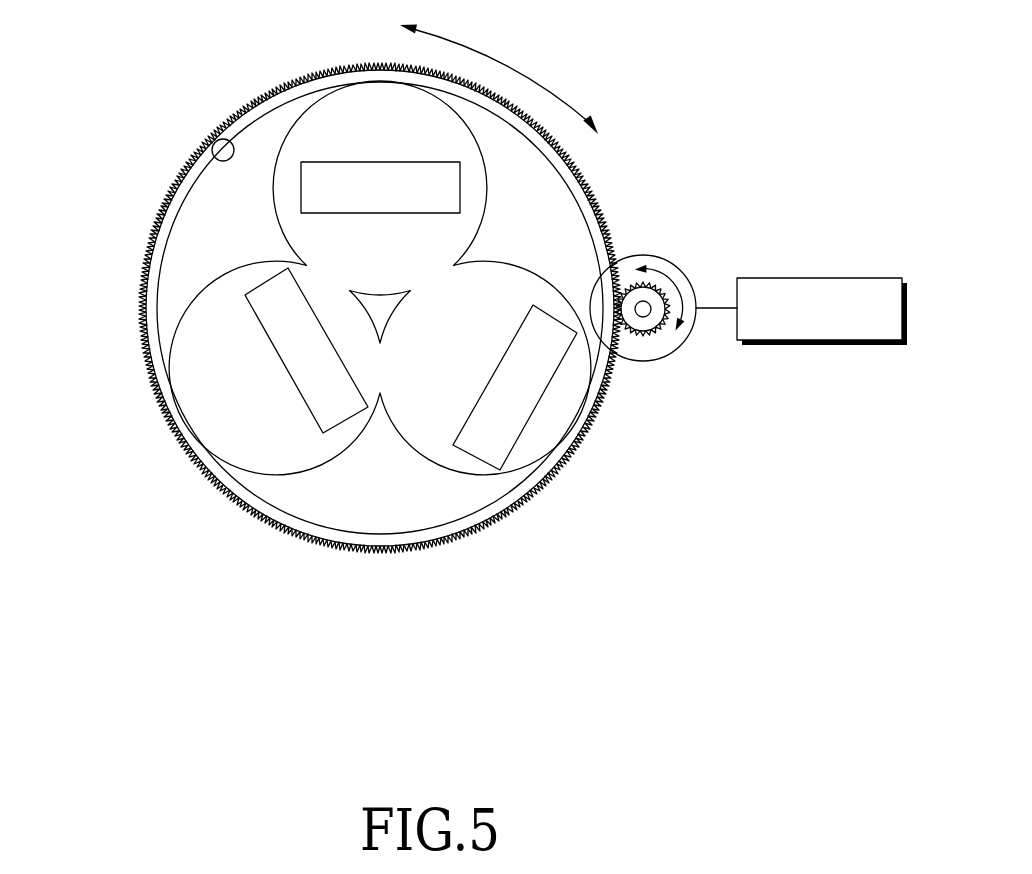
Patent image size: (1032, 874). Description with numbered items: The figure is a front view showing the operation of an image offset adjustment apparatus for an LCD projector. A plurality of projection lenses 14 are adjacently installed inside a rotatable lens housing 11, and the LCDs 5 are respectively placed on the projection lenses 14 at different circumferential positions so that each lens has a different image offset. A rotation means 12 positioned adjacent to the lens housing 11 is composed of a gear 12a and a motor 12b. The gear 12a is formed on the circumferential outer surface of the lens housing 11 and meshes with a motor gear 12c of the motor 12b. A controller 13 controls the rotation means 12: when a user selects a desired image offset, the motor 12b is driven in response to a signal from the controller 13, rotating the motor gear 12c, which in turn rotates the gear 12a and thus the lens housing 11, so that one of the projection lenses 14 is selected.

The LCD 5 is at (333, 417).
The lens housing 11 is at (214, 158).
The rotation means 12 is at (777, 150).
The gear 12a is at (594, 192).
The motor 12b is at (645, 256).
The motor gear 12c is at (664, 292).
The controller 13 is at (817, 340).
The projection lens 14 is at (287, 207).